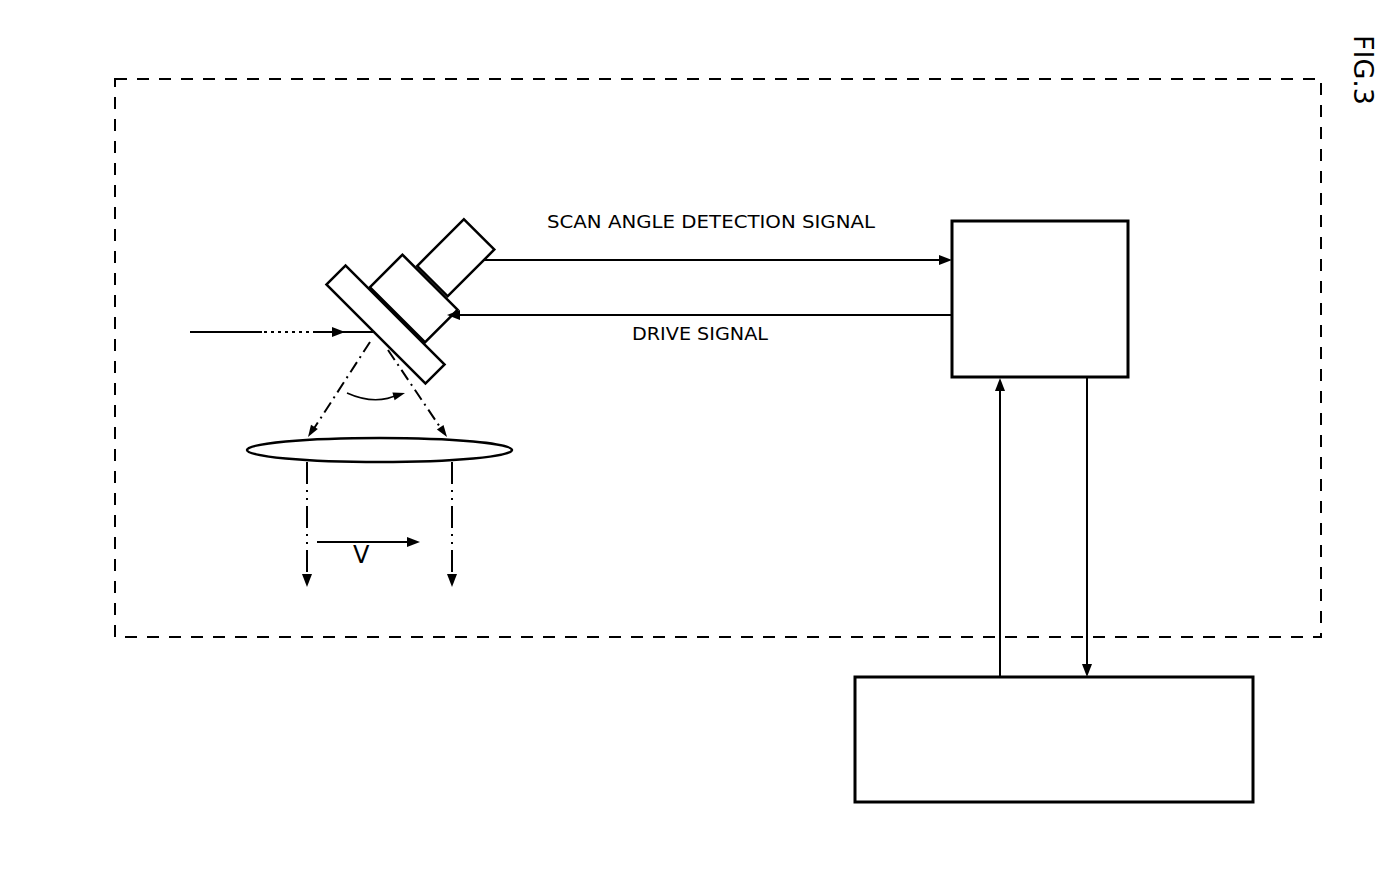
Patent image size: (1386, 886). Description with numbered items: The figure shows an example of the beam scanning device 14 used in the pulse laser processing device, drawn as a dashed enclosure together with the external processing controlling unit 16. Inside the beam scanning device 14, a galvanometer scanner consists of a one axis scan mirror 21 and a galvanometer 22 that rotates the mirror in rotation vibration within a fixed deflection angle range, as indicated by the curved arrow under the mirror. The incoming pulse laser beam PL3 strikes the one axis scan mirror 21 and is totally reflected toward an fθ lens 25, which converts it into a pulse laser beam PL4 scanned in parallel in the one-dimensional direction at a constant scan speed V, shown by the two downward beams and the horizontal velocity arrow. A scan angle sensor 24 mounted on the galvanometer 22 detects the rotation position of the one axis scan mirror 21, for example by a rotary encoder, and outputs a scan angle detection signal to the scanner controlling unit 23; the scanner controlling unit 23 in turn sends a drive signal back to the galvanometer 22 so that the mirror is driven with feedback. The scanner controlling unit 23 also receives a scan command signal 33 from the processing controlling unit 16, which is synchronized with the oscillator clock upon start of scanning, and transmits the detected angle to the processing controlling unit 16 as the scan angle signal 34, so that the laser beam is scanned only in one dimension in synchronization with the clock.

The beam scanning device 14 is at (253, 650).
The processing controlling unit 16 is at (1253, 748).
The one axis scan mirror 21 is at (446, 368).
The galvanometer 22 is at (388, 265).
The scanner controlling unit 23 is at (1006, 221).
The scan angle sensor 24 is at (464, 217).
The fθ lens 25 is at (511, 450).
The scan command signal 33 is at (1000, 527).
The scan angle signal 34 is at (1087, 520).
The pulse laser beam PL3 is at (223, 332).
The pulse laser beam PL4 is at (452, 520).